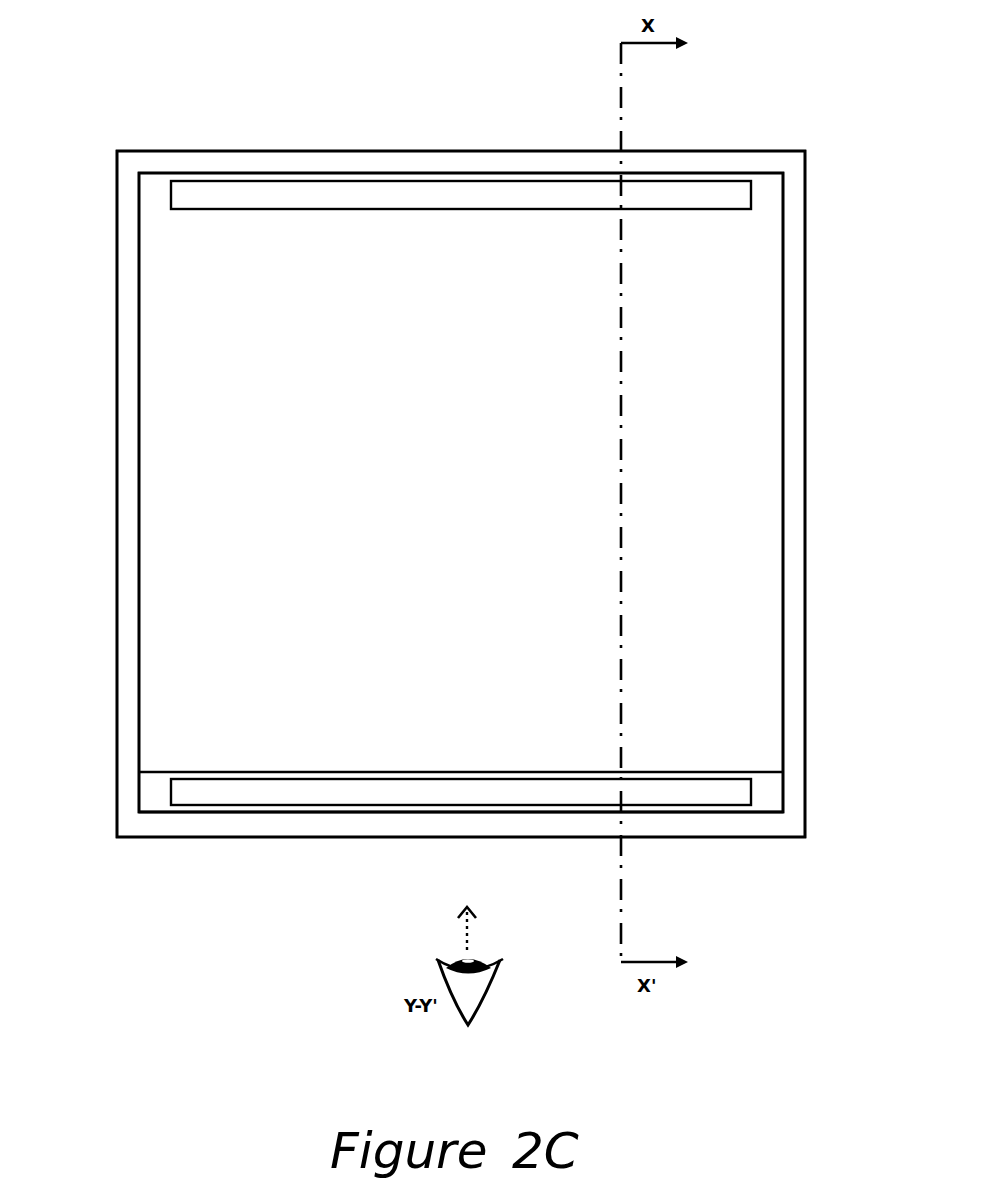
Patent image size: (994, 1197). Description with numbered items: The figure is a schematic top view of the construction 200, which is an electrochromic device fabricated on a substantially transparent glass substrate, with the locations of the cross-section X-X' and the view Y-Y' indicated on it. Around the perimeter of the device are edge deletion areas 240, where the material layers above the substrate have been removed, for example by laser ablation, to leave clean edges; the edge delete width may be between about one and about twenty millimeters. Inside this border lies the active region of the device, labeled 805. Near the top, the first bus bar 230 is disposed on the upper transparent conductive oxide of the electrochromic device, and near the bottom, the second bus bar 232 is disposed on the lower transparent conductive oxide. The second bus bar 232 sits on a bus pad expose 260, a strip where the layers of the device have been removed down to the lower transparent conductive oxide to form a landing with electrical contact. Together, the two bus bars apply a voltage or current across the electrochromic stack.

The construction 200 is at (211, 94).
The edge deletion areas 240 is at (539, 158).
The active area 805 is at (461, 492).
The bus bar 1 230 is at (282, 188).
The bus bar 2 232 is at (648, 786).
The bus pad expose 260 is at (155, 793).